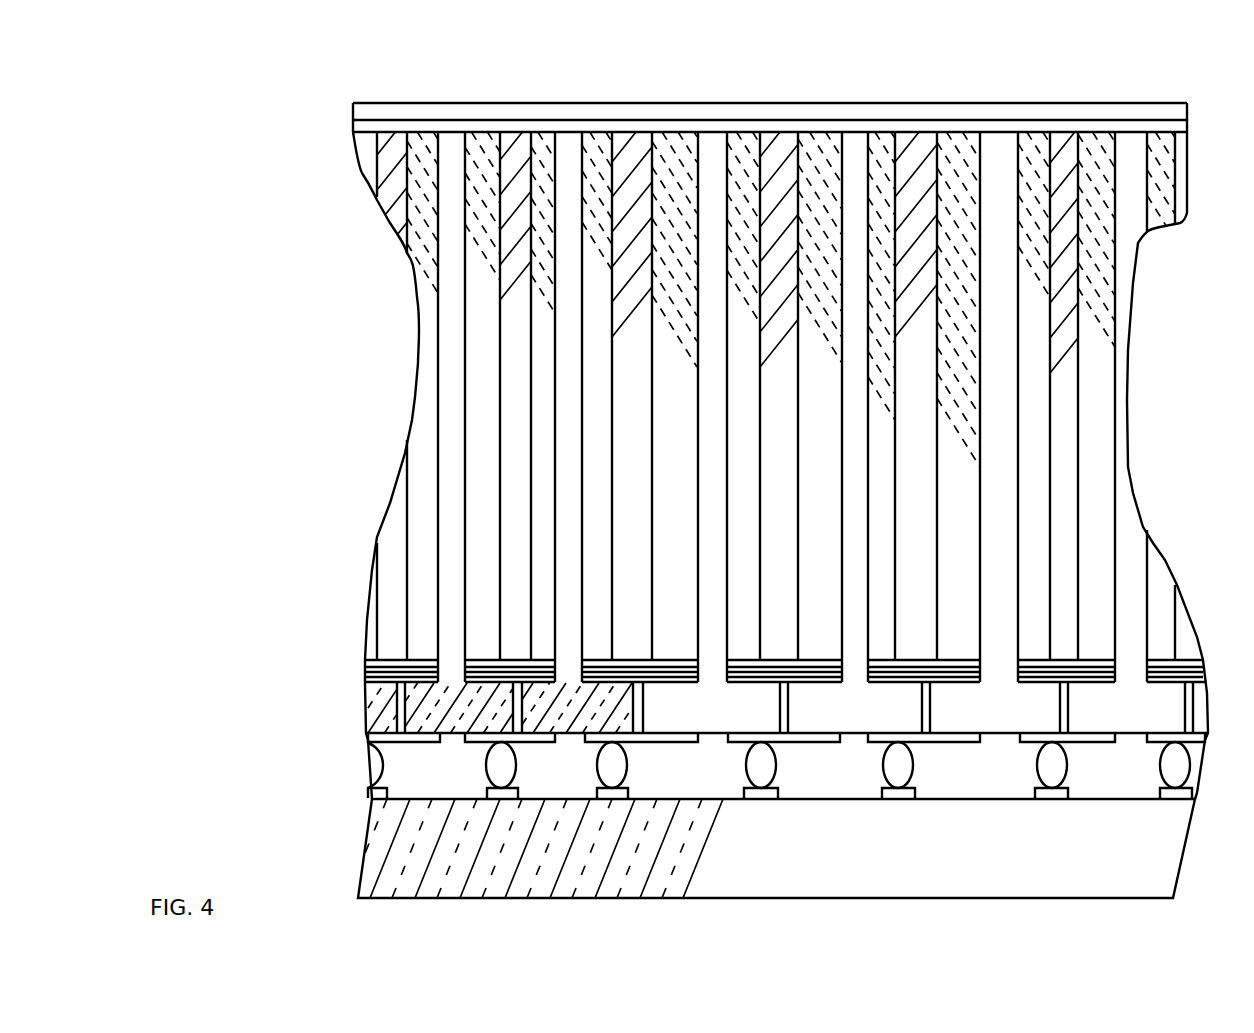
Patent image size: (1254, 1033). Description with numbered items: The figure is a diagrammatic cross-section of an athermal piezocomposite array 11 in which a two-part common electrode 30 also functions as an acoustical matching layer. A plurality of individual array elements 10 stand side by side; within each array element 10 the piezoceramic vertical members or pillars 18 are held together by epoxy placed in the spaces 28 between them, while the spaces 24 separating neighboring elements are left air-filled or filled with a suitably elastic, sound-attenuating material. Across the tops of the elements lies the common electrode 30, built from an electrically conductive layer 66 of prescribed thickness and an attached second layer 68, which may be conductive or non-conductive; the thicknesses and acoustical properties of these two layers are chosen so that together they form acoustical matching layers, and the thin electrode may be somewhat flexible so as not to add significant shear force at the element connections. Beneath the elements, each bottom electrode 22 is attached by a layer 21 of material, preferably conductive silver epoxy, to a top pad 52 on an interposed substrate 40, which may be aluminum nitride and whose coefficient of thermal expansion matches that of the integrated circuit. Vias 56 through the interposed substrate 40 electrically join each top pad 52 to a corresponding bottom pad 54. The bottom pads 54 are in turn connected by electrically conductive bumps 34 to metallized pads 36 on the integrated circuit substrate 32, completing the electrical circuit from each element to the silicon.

The array elements 10 is at (553, 93).
The athermal piezocomposite array 11 is at (373, 342).
The piezoceramic vertical members or pillars 18 is at (540, 180).
The layer of material 21 is at (463, 675).
The bottom electrode 22 is at (463, 663).
The spaces between elements 24 is at (567, 143).
The spaces 28 is at (520, 238).
The common electrode 30 is at (737, 122).
The integrated circuit substrate 32 is at (363, 843).
The electrically conductive bumps 34 is at (628, 765).
The metallized pads 36 is at (485, 792).
The interposed substrate 40 is at (729, 728).
The top pads 52 is at (440, 672).
The bottom pads 54 is at (480, 743).
The vias 56 is at (522, 708).
The electrically conductive layer 66 is at (353, 125).
The second layer 68 is at (353, 112).